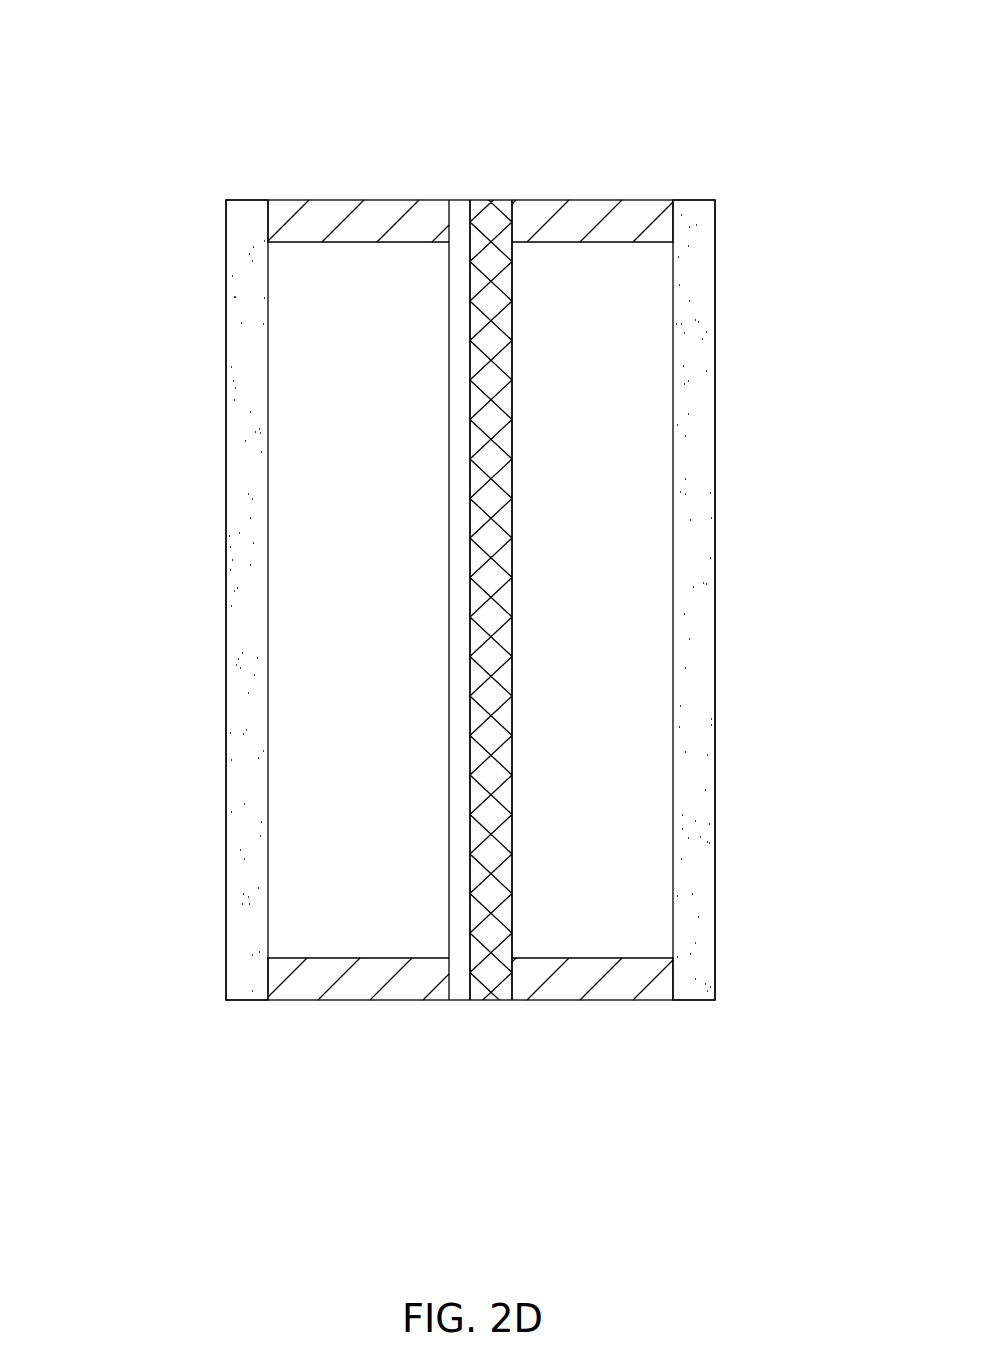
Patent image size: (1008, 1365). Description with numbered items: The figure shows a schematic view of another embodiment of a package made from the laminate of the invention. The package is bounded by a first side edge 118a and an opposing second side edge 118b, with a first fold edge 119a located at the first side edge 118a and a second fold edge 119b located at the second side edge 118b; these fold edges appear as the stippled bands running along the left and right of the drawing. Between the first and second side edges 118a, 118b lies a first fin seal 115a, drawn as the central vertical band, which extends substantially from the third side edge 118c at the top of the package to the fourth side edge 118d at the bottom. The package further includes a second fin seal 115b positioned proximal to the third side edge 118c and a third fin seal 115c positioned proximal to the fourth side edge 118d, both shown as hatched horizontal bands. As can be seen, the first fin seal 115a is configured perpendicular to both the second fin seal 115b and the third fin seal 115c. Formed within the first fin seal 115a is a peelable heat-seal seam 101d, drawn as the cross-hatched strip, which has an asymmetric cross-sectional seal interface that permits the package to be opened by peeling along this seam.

The peelable heat-seal seam 101d is at (496, 227).
The first fin seal 115a is at (310, 569).
The second fin seal 115b is at (597, 213).
The third fin seal 115c is at (362, 985).
The first side edge 118a is at (227, 852).
The second side edge 118b is at (715, 642).
The third side edge 118c is at (397, 200).
The fourth side edge 118d is at (565, 1000).
The first fold edge 119a is at (240, 635).
The second fold edge 119b is at (697, 483).